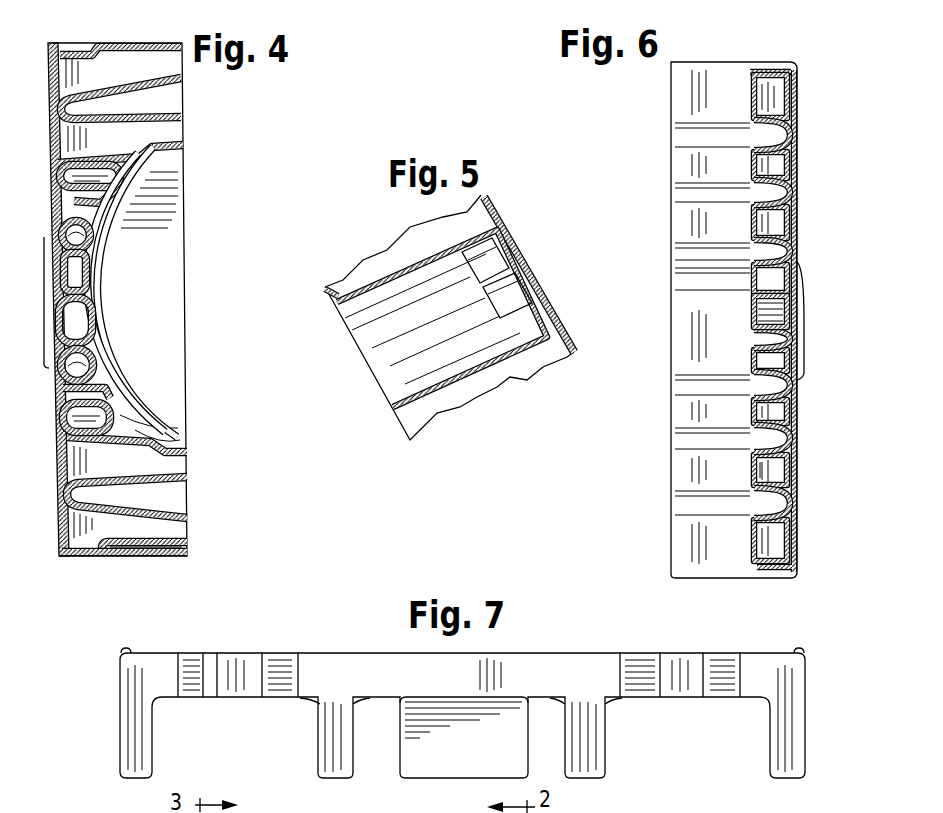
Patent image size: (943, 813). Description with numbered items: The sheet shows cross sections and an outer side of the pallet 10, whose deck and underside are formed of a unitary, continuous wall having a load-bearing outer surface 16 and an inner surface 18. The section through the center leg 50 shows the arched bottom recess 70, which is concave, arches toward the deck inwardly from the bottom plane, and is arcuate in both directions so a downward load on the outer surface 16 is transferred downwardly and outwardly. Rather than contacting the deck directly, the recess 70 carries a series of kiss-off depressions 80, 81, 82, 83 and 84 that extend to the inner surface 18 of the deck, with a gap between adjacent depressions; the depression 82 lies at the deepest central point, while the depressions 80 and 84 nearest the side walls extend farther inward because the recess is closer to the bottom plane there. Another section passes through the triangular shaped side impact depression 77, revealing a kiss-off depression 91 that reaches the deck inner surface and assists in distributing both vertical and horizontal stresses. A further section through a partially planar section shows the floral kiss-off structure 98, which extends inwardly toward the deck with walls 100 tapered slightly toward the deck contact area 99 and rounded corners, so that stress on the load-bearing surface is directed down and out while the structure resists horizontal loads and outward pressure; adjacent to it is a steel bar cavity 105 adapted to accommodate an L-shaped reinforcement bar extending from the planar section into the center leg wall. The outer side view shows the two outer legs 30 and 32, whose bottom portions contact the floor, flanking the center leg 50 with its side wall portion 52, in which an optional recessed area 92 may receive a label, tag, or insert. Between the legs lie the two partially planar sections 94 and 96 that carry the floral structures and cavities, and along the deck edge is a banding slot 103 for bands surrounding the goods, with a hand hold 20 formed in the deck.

In FIG. 4, the outer surface 16 is at (52, 513).
In FIG. 4, the inner surface 18 is at (67, 139).
In FIG. 4, the arched bottom recess 70 is at (120, 173).
In FIG. 4, the kiss-off depression 80 is at (152, 175).
In FIG. 4, the kiss-off depression 81 is at (84, 231).
In FIG. 4, the kiss-off depression 82 is at (70, 299).
In FIG. 4, the kiss-off depression 83 is at (80, 375).
In FIG. 4, the kiss-off depression 84 is at (93, 425).
In FIG. 5, the triangular shaped side impact depression 77 is at (378, 346).
In FIG. 5, the kiss-off depression 91 is at (518, 312).
In FIG. 6, the floral kiss-off structure 98 is at (790, 293).
In FIG. 6, the deck contact area 99 is at (801, 330).
In FIG. 6, the walls 100 is at (757, 307).
In FIG. 6, the steel bar cavity 105 is at (765, 473).
In FIG. 7, the outer leg 32 is at (138, 737).
In FIG. 7, the outer leg 30 is at (790, 747).
In FIG. 7, the planar section 96 is at (237, 700).
In FIG. 7, the side wall portion 52 is at (401, 684).
In FIG. 7, the recessed area 92 is at (432, 760).
In FIG. 7, the hand hold 20 is at (458, 812).
In FIG. 7, the pallet 10 is at (590, 812).
In FIG. 7, the center leg 50 is at (563, 778).
In FIG. 7, the planar section 94 is at (683, 698).
In FIG. 7, the banding slot 103 is at (733, 688).